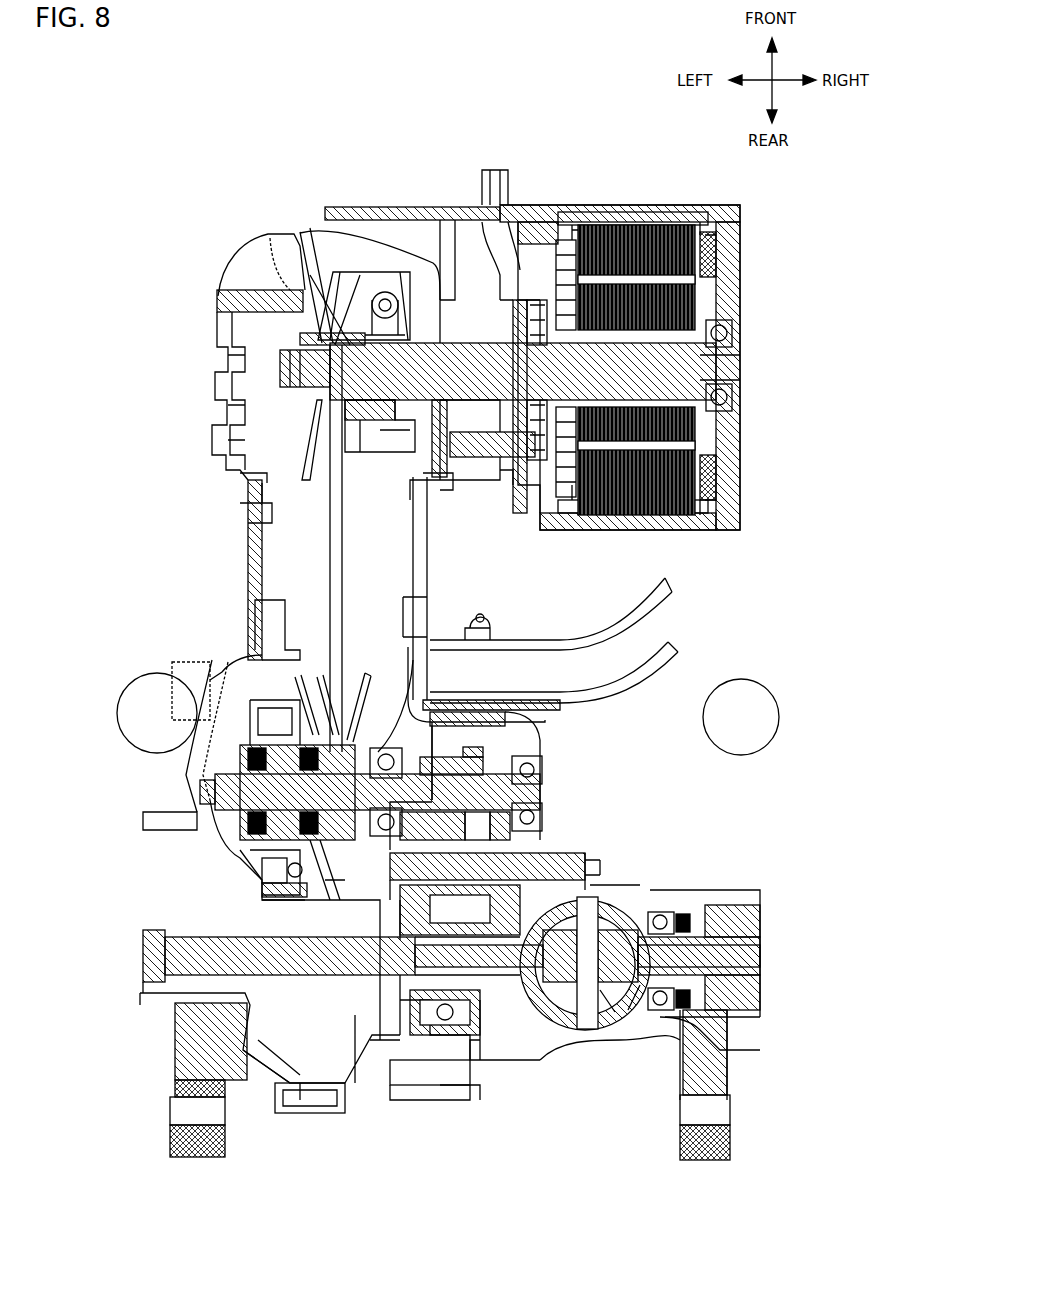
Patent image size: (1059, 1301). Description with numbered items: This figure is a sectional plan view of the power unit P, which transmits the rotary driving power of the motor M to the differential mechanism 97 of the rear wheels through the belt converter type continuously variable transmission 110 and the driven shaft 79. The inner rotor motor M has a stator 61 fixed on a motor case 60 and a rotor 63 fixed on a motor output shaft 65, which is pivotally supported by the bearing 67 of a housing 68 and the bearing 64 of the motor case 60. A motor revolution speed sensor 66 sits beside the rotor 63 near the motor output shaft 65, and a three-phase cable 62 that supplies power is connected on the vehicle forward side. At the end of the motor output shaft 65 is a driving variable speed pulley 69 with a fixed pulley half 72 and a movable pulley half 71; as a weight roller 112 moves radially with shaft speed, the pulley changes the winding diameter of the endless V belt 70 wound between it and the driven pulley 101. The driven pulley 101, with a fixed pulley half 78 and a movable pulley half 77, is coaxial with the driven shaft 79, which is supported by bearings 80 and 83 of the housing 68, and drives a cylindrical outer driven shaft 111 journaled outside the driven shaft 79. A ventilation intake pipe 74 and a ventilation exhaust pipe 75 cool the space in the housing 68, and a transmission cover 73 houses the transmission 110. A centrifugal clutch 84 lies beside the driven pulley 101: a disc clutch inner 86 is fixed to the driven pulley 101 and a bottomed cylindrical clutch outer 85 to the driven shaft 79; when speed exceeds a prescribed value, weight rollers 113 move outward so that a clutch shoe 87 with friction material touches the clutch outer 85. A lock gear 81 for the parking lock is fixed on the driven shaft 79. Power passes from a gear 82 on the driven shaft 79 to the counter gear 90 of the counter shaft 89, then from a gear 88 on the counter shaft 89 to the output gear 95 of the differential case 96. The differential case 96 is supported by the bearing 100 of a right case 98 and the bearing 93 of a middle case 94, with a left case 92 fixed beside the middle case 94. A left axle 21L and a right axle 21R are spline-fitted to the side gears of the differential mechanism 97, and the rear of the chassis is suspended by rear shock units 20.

The power unit P is at (250, 195).
The motor M is at (660, 196).
The rear shock units 20 is at (132, 733).
The left axle 21L is at (190, 950).
The right axle 21R is at (720, 958).
The motor case 60 is at (712, 208).
The stator 61 is at (619, 214).
The three-phase cable 62 is at (491, 183).
The rotor 63 is at (697, 298).
The bearing 64 is at (728, 397).
The motor output shaft 65 is at (663, 370).
The motor revolution speed sensor 66 is at (536, 446).
The bearing 67 is at (462, 414).
The housing 68 is at (398, 211).
The driving variable speed pulley 69 is at (343, 262).
The V belt 70 is at (325, 268).
The movable pulley half 71 is at (352, 440).
The fixed pulley half 72 is at (308, 440).
The transmission cover 73 is at (226, 300).
The ventilation intake pipe 74 is at (572, 640).
The ventilation exhaust pipe 75 is at (220, 665).
The movable pulley half 77 is at (318, 672).
The fixed pulley half 78 is at (352, 705).
The driven shaft 79 is at (214, 792).
The bearing 80 is at (386, 754).
The lock gear 81 is at (462, 746).
The gear 82 is at (510, 775).
The bearing 83 is at (545, 826).
The centrifugal clutch 84 is at (212, 858).
The clutch outer 85 is at (215, 832).
The clutch inner 86 is at (241, 860).
The clutch shoe 87 is at (270, 896).
The gear 88 is at (531, 811).
The counter shaft 89 is at (548, 868).
The counter gear 90 is at (547, 834).
The left case 92 is at (212, 1072).
The bearing 93 is at (383, 1050).
The middle case 94 is at (412, 1046).
The output gear 95 is at (455, 1022).
The differential case 96 is at (550, 1030).
The differential mechanism 97 is at (625, 1014).
The right case 98 is at (698, 1062).
The bearing 100 is at (660, 914).
The driven pulley 101 is at (350, 614).
The belt converter type continuously variable transmission 110 is at (302, 527).
The outer driven shaft 111 is at (262, 748).
The weight roller 112 is at (375, 290).
The weight rollers 113 is at (290, 870).